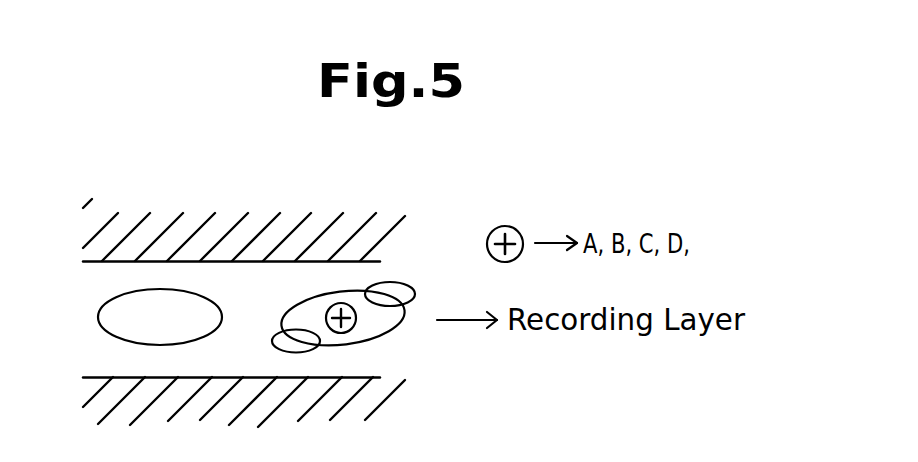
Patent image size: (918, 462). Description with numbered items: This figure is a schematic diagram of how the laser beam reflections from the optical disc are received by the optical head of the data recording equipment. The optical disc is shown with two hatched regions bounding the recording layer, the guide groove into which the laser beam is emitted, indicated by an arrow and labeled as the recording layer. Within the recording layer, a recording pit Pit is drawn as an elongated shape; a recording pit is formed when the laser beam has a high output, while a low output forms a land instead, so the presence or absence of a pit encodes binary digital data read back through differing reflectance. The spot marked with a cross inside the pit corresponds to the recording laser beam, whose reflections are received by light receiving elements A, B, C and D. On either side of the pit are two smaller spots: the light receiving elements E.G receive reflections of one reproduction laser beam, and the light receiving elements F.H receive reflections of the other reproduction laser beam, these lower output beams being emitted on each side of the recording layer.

The recording pit Pit is at (392, 333).
The light receiving elements E, G E.G is at (390, 294).
The light receiving elements F, H F.H is at (296, 341).